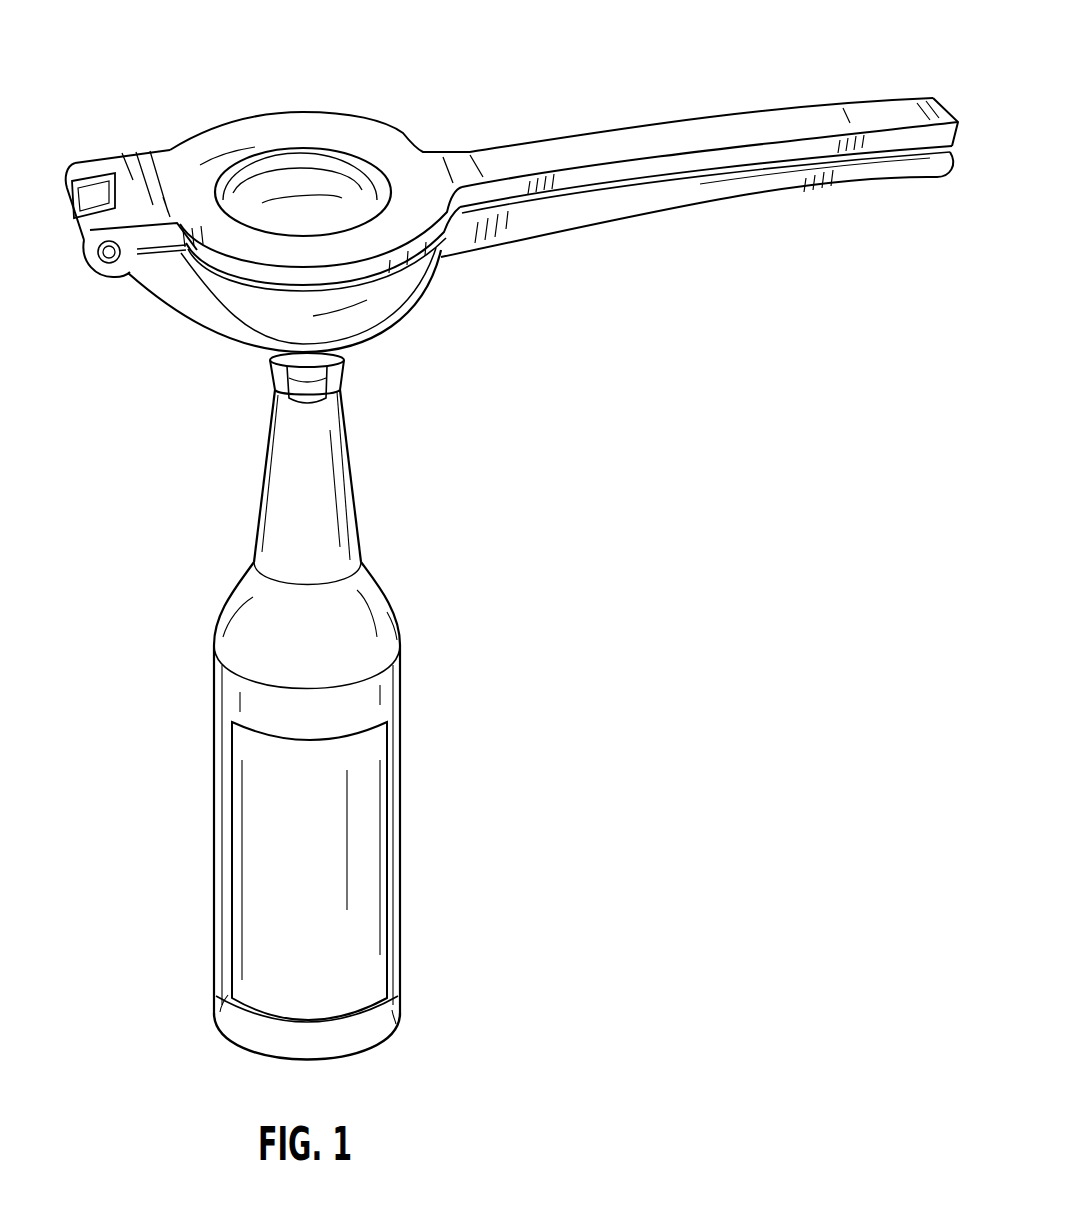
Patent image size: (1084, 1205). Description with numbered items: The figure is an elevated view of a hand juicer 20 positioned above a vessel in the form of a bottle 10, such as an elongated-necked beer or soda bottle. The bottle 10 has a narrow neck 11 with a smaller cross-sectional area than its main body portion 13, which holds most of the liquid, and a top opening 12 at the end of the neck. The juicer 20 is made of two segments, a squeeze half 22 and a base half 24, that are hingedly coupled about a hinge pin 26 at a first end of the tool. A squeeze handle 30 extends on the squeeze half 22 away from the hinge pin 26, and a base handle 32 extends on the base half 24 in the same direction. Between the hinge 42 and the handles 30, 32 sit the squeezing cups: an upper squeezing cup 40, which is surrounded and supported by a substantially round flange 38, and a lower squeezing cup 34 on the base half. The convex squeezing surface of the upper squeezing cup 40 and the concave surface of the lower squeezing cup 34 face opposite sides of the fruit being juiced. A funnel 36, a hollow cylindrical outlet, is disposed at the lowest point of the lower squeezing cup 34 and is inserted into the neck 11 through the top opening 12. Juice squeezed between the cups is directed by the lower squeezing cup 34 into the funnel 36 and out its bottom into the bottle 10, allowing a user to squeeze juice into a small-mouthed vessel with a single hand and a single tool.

The bottle 10 is at (450, 740).
The neck 11 is at (340, 497).
The top opening 12 is at (348, 358).
The main body portion 13 is at (360, 850).
The juicer 20 is at (364, 58).
The squeeze half 22 is at (408, 136).
The base half 24 is at (578, 217).
The hinge pin 26 is at (108, 264).
The squeeze handle 30 is at (738, 118).
The base handle 32 is at (760, 186).
The lower squeezing cup 34 is at (250, 318).
The funnel 36 is at (306, 366).
The flange 38 is at (290, 124).
The upper squeezing cup 40 is at (246, 176).
The hinge 42 is at (62, 160).